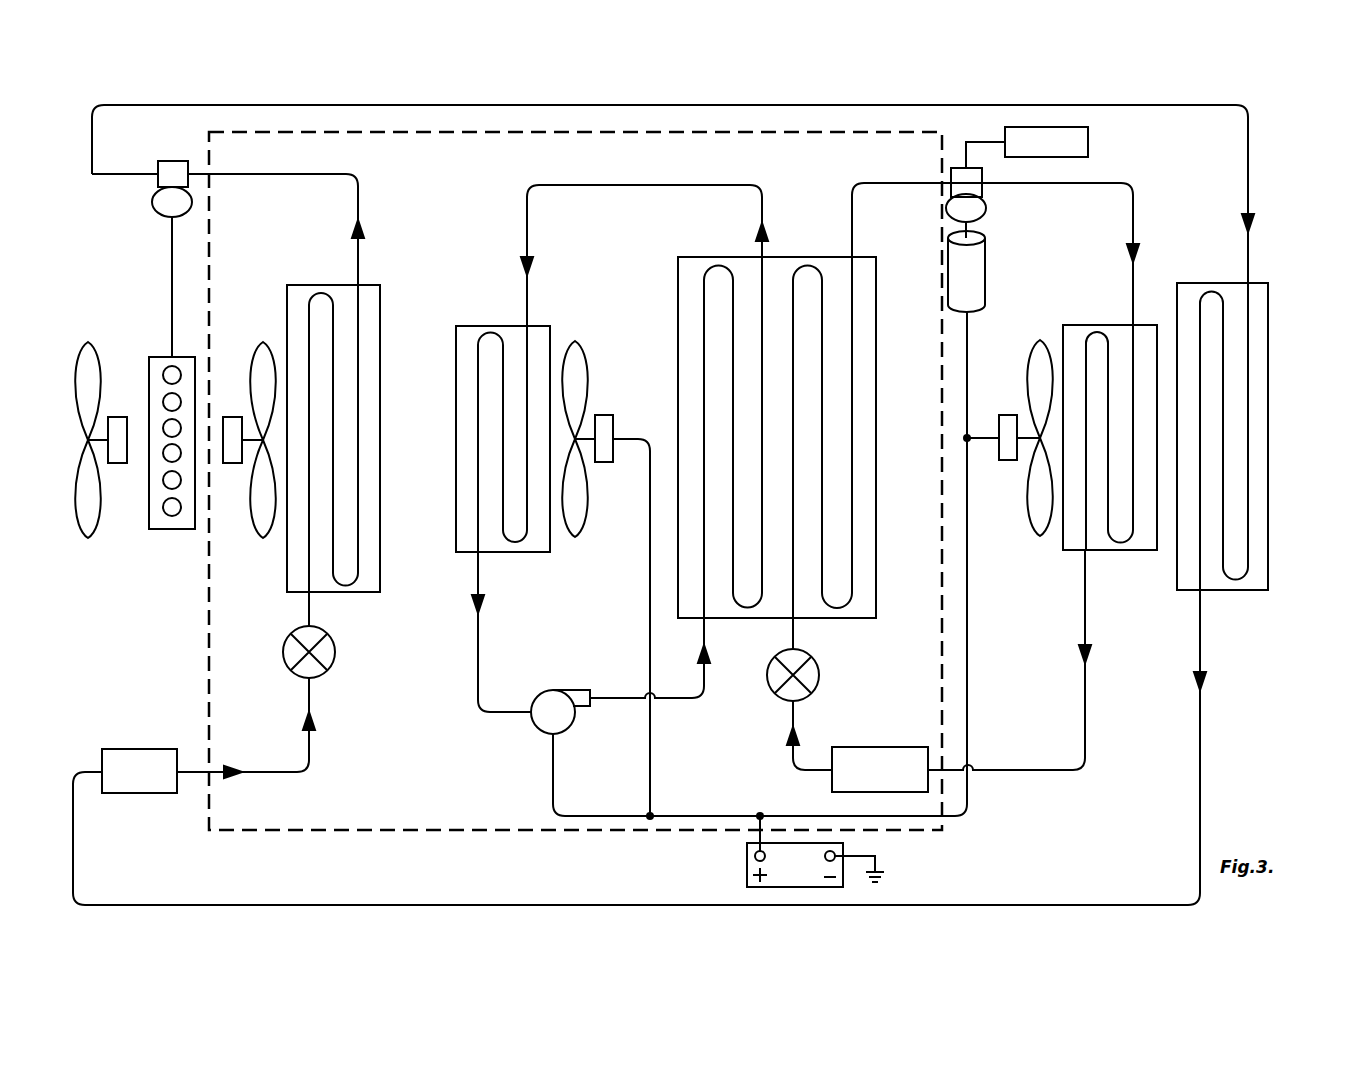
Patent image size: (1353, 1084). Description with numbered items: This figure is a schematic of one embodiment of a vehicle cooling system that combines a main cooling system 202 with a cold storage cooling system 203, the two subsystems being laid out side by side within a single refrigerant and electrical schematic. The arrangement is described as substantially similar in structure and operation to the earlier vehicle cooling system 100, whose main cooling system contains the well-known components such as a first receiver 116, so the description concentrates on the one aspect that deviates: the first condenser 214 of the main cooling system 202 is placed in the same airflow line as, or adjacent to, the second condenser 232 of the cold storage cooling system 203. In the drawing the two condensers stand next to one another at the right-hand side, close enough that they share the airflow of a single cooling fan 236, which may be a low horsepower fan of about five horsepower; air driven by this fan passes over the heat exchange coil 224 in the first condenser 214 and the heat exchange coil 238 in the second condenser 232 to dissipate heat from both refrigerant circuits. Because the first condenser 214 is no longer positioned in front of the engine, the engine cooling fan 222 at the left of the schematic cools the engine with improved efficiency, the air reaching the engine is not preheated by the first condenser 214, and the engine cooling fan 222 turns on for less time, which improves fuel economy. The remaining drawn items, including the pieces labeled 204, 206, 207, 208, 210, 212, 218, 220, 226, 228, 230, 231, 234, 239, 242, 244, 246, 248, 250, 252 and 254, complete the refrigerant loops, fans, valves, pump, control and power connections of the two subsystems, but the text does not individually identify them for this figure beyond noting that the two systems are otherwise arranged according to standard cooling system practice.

The vehicle cooling system 100 is at (168, 828).
The first receiver 116 is at (135, 749).
The main cooling system 202 is at (402, 195).
The cold storage cooling system 203 is at (954, 836).
The coolant conduit 204 is at (1104, 756).
The coolant conduit 206 is at (754, 185).
The battery pack 207 is at (160, 357).
The valve 208 is at (202, 160).
The heat exchanger 210 is at (790, 257).
The pump 212 is at (156, 206).
The first condenser 214 is at (1215, 283).
The expansion valve 218 is at (333, 658).
The evaporator 220 is at (380, 497).
The engine cooling fan 222 is at (115, 463).
The heat exchange coil 224 is at (1245, 548).
The evaporator tube 226 is at (358, 352).
The fan motor 228 is at (232, 463).
The pump 230 is at (985, 200).
The reservoir 231 is at (982, 285).
The second condenser 232 is at (1100, 325).
The controller 234 is at (885, 747).
The cooling fan 236 is at (819, 667).
The heat exchange coil 238 is at (1118, 527).
The heat exchanger tube 239 is at (860, 545).
The pump 242 is at (557, 690).
The heat exchanger tube 244 is at (705, 592).
The heat exchanger 246 is at (458, 418).
The fan motor 248 is at (602, 415).
The controller 250 is at (1090, 147).
The electrical line 252 is at (690, 824).
The battery 254 is at (747, 862).